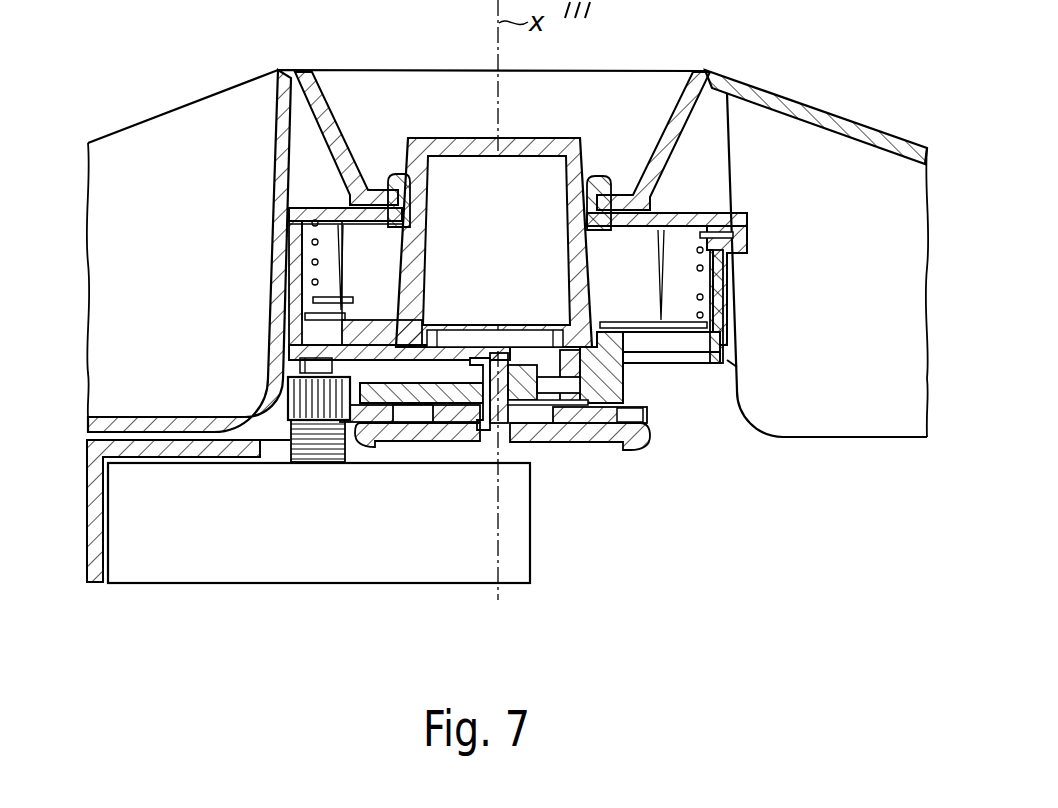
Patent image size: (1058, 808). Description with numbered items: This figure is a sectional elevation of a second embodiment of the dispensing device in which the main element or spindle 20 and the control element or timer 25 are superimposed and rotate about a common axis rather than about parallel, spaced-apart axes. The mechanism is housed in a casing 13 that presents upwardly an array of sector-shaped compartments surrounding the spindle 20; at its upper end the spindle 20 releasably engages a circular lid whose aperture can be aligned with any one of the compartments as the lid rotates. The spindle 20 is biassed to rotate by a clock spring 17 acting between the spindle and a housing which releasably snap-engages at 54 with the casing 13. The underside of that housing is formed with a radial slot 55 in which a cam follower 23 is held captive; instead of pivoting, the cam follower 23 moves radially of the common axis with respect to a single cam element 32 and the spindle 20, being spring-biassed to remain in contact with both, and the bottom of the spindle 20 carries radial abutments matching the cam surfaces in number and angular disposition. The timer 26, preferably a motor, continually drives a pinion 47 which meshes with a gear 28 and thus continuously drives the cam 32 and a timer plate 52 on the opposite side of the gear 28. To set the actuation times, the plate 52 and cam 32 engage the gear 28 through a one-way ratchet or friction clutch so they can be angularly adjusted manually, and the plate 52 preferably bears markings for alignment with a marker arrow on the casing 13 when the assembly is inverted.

The casing 13 is at (276, 200).
The spindle 20 is at (416, 82).
The snap engagement 54 is at (606, 196).
The clock spring 17 is at (802, 257).
The cam follower 23 is at (607, 384).
The radial slot 55 is at (720, 366).
The timer 25 is at (447, 396).
The cam element 32 is at (567, 398).
The gear 28 is at (730, 405).
The timer plate 52 is at (672, 463).
The pinion 47 is at (298, 393).
The timer motor 26 is at (327, 493).